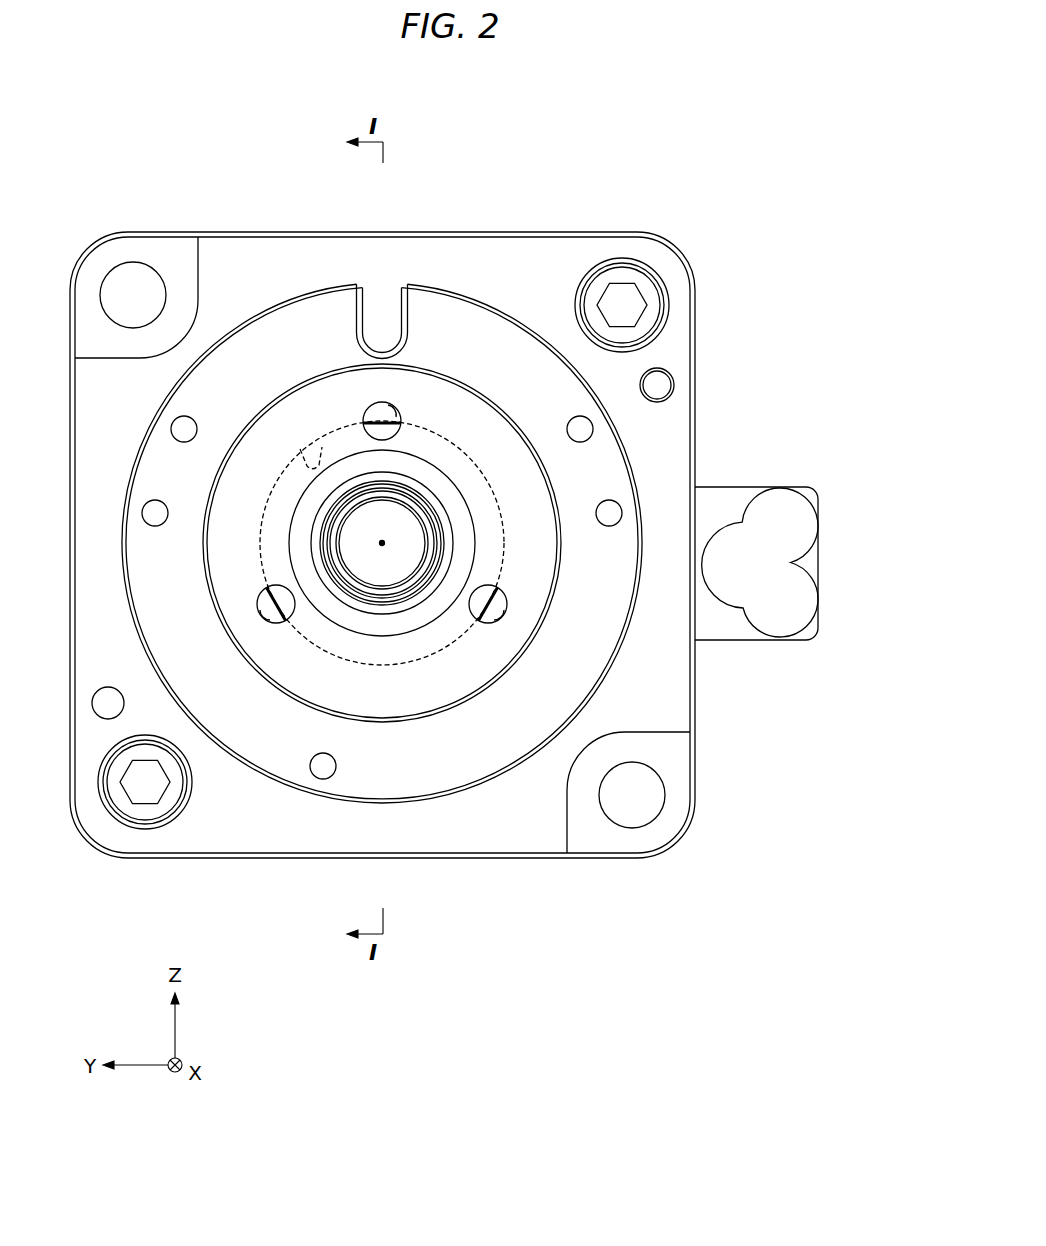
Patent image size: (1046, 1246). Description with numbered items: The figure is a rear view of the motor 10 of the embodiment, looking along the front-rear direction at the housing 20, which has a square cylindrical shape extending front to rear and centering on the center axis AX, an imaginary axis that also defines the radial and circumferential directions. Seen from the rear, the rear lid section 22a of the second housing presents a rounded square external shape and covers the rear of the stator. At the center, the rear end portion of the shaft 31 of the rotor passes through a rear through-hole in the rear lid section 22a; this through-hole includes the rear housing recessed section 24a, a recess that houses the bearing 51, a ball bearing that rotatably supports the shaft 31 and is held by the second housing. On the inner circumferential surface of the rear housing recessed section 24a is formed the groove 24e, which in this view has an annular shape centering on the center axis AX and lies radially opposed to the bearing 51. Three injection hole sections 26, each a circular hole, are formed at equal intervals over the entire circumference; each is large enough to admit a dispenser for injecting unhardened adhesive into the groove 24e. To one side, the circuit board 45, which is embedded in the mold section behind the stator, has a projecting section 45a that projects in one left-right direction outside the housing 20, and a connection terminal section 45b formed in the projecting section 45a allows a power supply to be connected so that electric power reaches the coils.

The motor 10 is at (684, 152).
The housing 20 is at (676, 241).
The rear lid section 22a is at (285, 262).
The rear housing recessed section 24a is at (426, 500).
The groove 24e is at (316, 445).
The injection hole section 26 is at (398, 418).
The shaft 31 is at (373, 572).
The center axis AX is at (384, 547).
The circuit board 45 is at (797, 640).
The projecting section 45a is at (722, 632).
The connection terminal section 45b is at (803, 602).
The bearing 51 is at (452, 527).